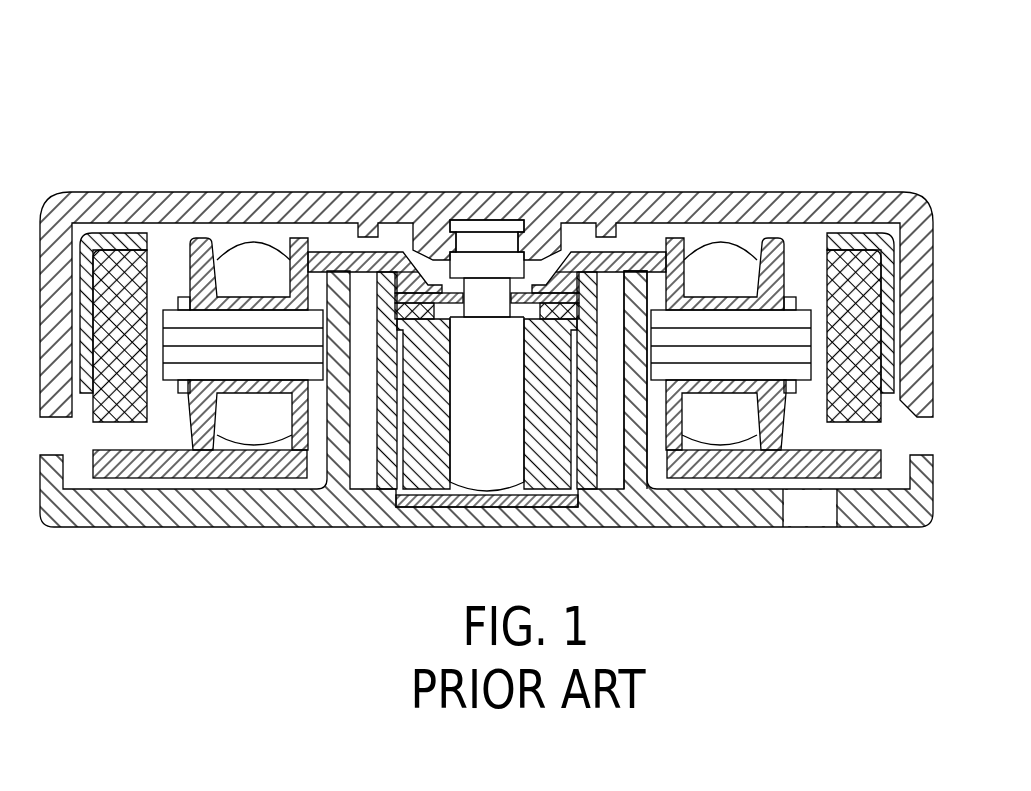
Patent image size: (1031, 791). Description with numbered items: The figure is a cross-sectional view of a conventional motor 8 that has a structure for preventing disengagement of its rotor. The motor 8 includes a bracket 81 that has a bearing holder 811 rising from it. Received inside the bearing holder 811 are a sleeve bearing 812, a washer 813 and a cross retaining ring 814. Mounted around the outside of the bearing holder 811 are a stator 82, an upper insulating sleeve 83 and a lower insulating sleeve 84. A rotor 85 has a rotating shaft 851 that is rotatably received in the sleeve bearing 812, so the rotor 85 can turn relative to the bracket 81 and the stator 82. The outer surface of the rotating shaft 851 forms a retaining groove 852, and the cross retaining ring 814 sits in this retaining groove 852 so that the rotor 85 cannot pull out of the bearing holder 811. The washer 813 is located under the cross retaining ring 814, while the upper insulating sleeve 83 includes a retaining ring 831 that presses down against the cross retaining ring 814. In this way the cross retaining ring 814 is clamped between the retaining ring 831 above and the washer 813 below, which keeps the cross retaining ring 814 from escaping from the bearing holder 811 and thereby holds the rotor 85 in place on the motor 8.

The motor 8 is at (943, 132).
The bracket 81 is at (886, 515).
The bearing holder 811 is at (645, 335).
The sleeve bearing 812 is at (428, 473).
The washer 813 is at (558, 290).
The cross retaining ring 814 is at (523, 292).
The stator 82 is at (802, 320).
The upper insulating sleeve 83 is at (768, 242).
The retaining ring 831 is at (542, 280).
The lower insulating sleeve 84 is at (773, 423).
The rotor 85 is at (882, 192).
The rotating shaft 851 is at (488, 337).
The retaining groove 852 is at (457, 287).